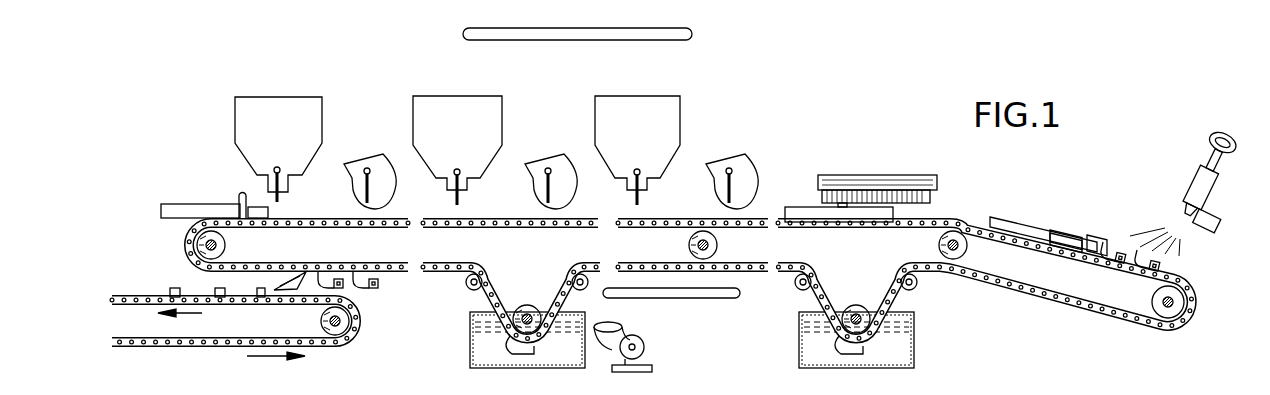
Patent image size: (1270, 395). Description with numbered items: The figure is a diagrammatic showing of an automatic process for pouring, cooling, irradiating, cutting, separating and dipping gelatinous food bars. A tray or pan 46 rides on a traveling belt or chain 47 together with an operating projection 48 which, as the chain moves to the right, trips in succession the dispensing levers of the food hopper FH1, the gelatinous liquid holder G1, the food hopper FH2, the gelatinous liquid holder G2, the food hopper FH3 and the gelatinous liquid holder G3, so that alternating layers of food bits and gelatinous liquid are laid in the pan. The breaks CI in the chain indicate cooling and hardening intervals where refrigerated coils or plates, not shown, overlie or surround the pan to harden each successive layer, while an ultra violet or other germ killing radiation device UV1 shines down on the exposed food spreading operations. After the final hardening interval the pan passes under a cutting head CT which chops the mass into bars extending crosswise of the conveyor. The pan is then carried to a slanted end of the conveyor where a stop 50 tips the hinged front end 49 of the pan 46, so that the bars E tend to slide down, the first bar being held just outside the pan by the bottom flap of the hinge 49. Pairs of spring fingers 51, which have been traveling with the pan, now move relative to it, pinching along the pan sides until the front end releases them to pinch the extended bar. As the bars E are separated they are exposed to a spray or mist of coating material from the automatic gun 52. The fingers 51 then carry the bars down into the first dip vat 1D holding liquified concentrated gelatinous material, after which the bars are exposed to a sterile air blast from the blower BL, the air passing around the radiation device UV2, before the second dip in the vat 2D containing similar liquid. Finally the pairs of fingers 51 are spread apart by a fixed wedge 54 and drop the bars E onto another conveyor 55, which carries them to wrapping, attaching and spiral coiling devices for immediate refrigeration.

The tray or pan 46 is at (172, 210).
The traveling belt or chain 47 is at (332, 228).
The operating projection 48 is at (238, 198).
The hinged front end 49 is at (1087, 236).
The stop 50 is at (1097, 234).
The spring fingers 51 is at (358, 288).
The automatic gun 52 is at (1195, 185).
The fixed wedge 54 is at (272, 281).
The conveyor 55 is at (228, 300).
The bars E is at (172, 288).
The breaks in the chain CI is at (802, 265).
The food hopper FH1 is at (278, 149).
The food hopper FH2 is at (457, 150).
The food hopper FH3 is at (637, 150).
The gelatinous liquid holder G1 is at (370, 181).
The gelatinous liquid holder G2 is at (551, 181).
The gelatinous liquid holder G3 is at (732, 181).
The ultra violet radiation device UV1 is at (655, 36).
The radiation device UV2 is at (690, 297).
The blower BL is at (645, 335).
The cutting head CT is at (897, 180).
The second dip vat 2D is at (557, 355).
The first dip vat 1D is at (912, 342).